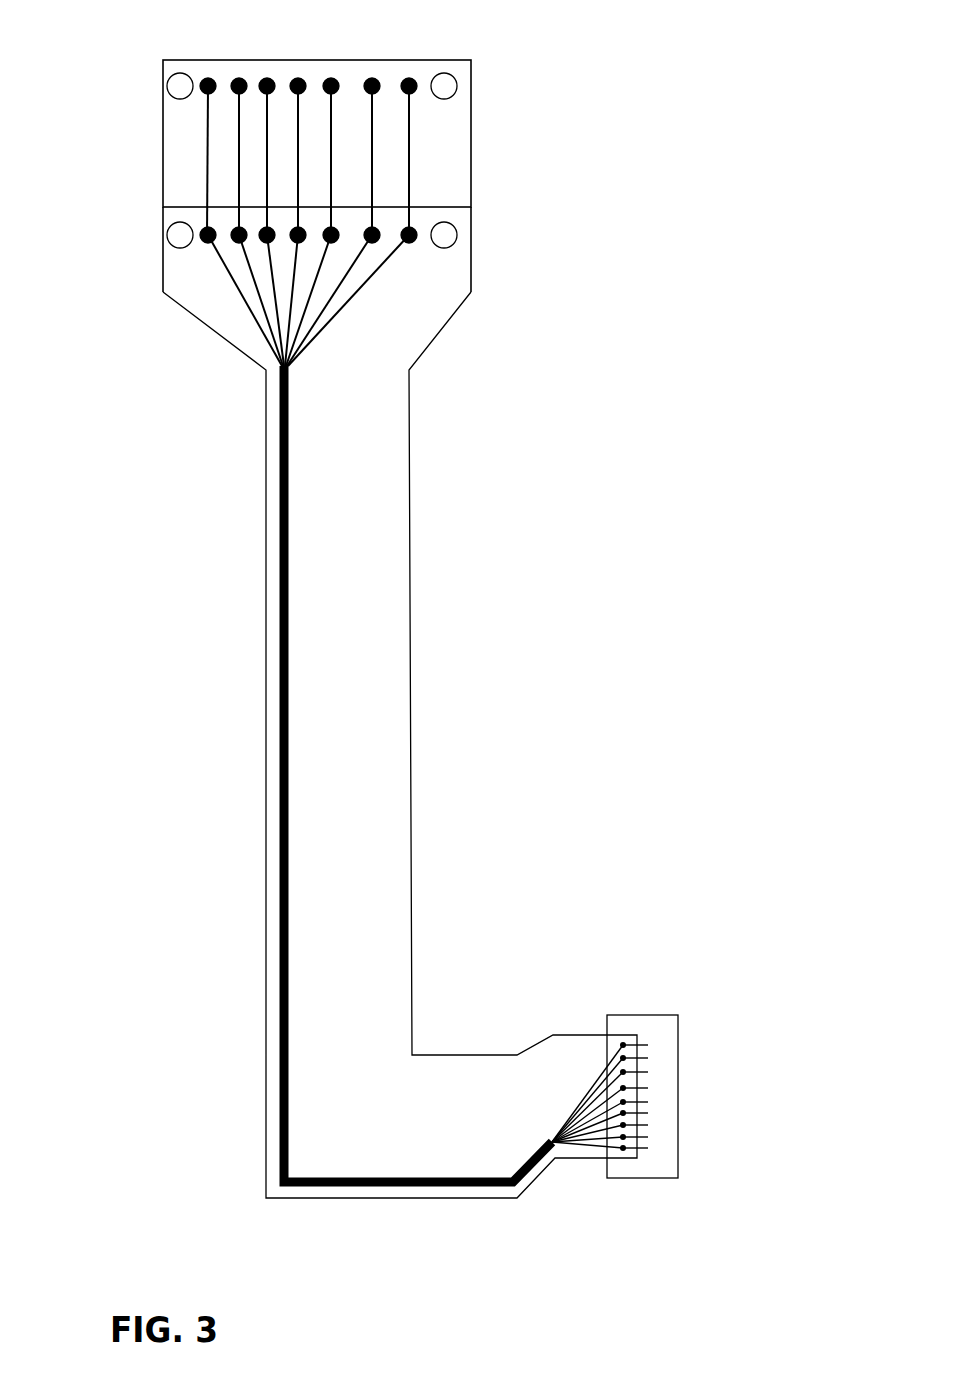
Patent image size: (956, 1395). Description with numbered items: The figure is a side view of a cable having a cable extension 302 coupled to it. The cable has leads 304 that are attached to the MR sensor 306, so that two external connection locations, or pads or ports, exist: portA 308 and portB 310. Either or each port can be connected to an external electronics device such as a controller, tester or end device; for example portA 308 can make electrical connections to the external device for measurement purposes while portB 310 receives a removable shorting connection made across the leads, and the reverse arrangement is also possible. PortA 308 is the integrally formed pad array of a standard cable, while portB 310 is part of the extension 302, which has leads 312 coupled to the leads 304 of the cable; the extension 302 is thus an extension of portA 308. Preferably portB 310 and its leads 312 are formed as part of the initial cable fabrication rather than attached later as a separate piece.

The cable extension 302 is at (471, 143).
The leads 304 is at (367, 292).
The MR sensor 306 is at (648, 1015).
The portA 308 is at (163, 250).
The portB 310 is at (163, 89).
The leads of the extension 312 is at (410, 178).